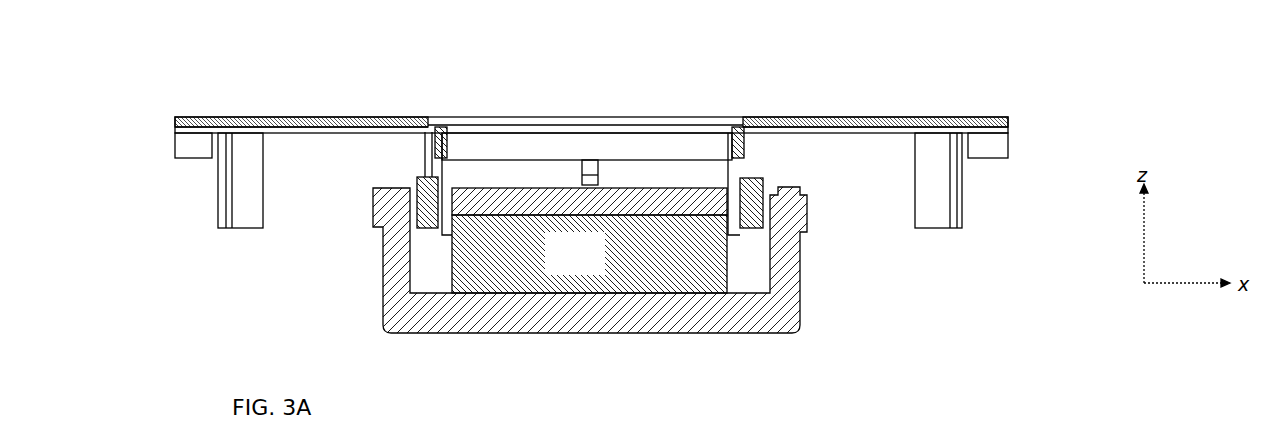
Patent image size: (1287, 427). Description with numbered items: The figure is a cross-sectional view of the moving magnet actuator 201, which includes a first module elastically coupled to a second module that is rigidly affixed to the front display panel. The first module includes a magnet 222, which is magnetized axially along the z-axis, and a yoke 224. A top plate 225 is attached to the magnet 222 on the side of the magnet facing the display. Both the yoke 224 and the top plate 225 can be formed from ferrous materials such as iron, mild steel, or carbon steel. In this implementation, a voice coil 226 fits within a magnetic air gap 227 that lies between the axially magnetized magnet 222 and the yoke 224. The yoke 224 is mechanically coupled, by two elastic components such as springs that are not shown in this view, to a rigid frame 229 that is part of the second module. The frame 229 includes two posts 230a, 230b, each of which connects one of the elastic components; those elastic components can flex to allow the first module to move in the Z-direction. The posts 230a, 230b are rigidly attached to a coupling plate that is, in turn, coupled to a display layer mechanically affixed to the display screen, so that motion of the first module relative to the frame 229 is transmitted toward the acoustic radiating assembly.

The moving magnet actuator 201 is at (648, 195).
The magnet 222 is at (597, 269).
The yoke 224 is at (787, 280).
The top plate 225 is at (652, 192).
The voice coil 226 is at (758, 199).
The magnetic air gap 227 is at (418, 237).
The rigid frame 229 is at (365, 133).
The post 230a is at (237, 212).
The post 230b is at (932, 182).